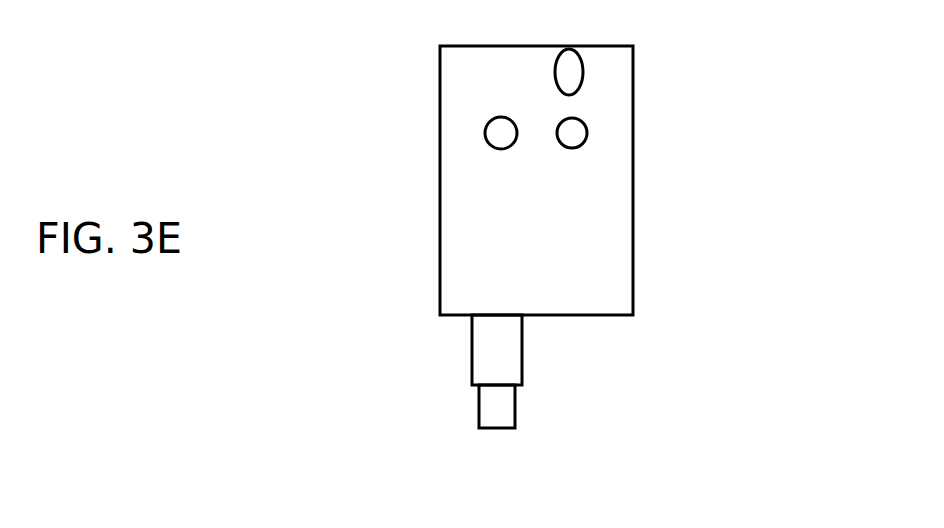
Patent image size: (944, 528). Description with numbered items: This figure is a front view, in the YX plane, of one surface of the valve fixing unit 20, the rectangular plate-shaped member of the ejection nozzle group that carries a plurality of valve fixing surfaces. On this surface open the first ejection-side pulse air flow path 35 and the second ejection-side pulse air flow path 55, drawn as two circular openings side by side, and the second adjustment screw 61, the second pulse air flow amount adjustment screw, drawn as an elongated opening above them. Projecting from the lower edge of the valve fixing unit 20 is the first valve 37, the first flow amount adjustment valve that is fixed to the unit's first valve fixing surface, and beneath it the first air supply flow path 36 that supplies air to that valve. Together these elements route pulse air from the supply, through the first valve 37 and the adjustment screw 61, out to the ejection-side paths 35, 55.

The valve fixing unit 20 is at (596, 263).
The second adjustment screw 61 is at (569, 72).
The first ejection-side pulse air flow path 35 is at (501, 133).
The second ejection-side pulse air flow path 55 is at (572, 133).
The first valve 37 is at (472, 352).
The first air supply flow path 36 is at (479, 404).